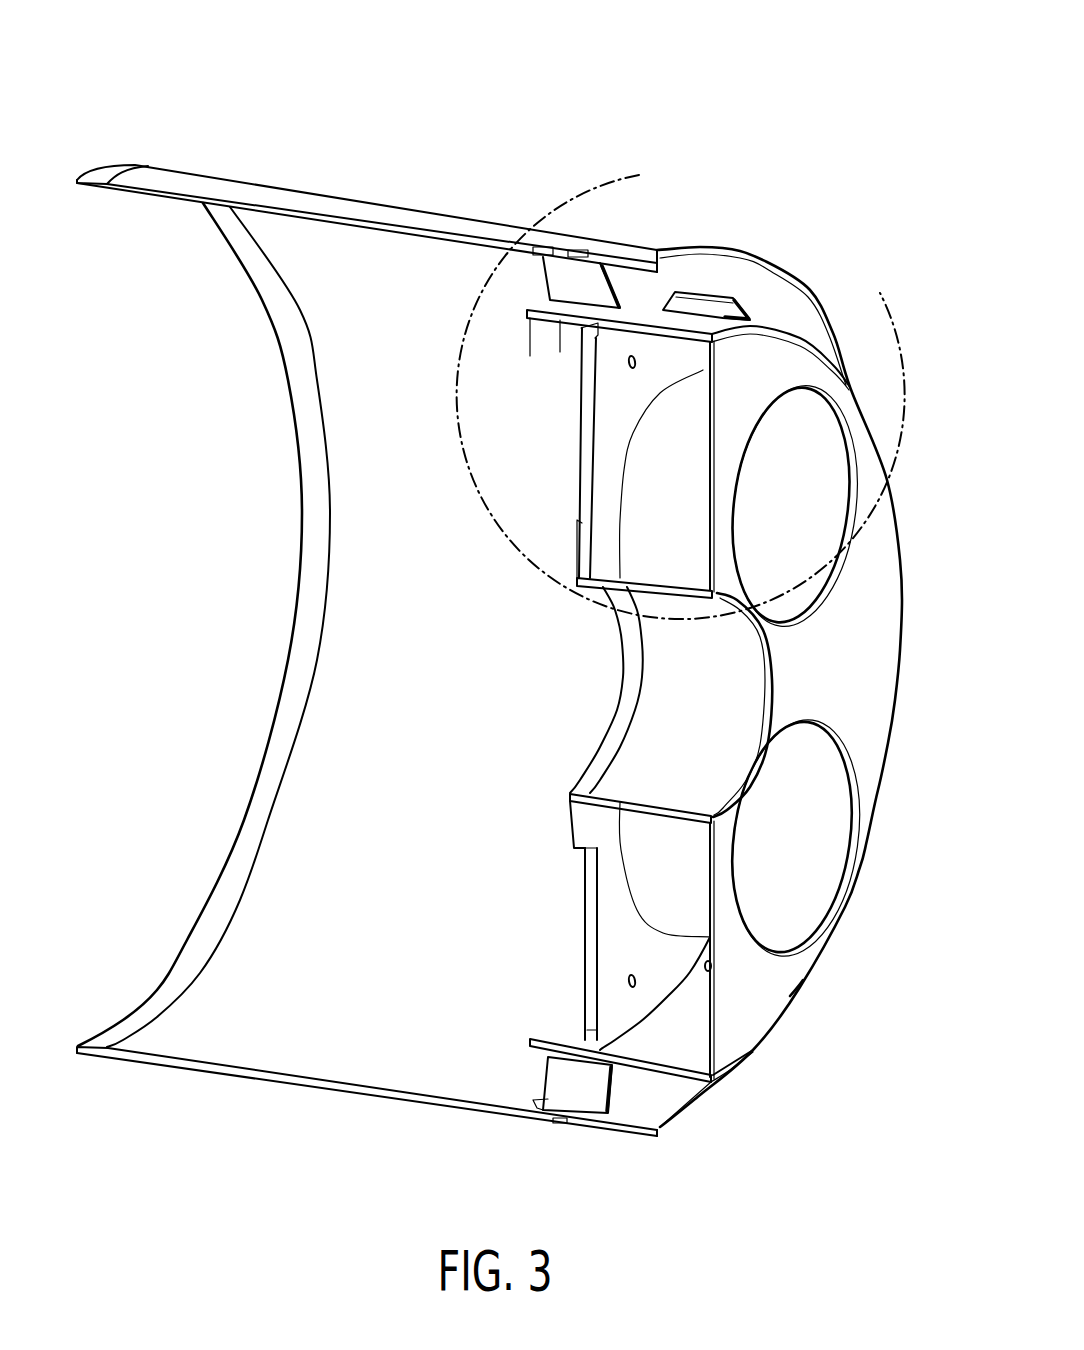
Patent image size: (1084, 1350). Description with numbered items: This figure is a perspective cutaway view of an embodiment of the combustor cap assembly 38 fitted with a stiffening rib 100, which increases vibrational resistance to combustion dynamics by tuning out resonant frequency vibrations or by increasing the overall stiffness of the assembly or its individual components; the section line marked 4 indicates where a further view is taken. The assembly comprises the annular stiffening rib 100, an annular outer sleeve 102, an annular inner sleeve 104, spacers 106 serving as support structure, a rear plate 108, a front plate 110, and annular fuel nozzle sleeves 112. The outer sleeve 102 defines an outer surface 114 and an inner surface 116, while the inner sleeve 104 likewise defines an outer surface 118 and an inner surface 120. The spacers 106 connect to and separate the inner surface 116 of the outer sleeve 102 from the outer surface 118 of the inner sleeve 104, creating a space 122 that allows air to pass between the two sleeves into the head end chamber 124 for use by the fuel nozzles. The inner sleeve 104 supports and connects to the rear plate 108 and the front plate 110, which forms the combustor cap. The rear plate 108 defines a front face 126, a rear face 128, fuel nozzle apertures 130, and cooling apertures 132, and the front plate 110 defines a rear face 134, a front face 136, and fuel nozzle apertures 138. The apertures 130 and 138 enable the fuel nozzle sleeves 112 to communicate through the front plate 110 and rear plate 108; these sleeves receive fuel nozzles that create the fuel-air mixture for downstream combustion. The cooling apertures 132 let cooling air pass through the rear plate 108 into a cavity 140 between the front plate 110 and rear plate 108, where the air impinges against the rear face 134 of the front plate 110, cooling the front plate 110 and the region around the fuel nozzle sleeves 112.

The combustor cap assembly 38 is at (732, 123).
The annular outer sleeve 102 is at (388, 190).
The outer surface 114 is at (450, 212).
The inner surface 116 is at (323, 220).
The chamber 124 is at (378, 658).
The space 122 is at (650, 1100).
The section line 4- 4 is at (872, 284).
The front plate 110 is at (872, 735).
The spacers 106 is at (720, 300).
The stiffening rib 100 is at (532, 335).
The inner surface 120 is at (560, 353).
The cooling apertures 132 is at (631, 368).
The annular fuel nozzle sleeves 112 is at (793, 450).
The fuel nozzle apertures 138 is at (847, 433).
The fuel nozzle apertures 130 is at (620, 647).
The annular inner sleeve 104 is at (560, 983).
The rear plate 108 is at (587, 947).
The front face 126 is at (610, 902).
The rear face 128 is at (583, 850).
The outer surface 118 is at (675, 1077).
The cavity 140 is at (693, 1013).
The rear face 134 is at (707, 968).
The front face 136 is at (793, 973).